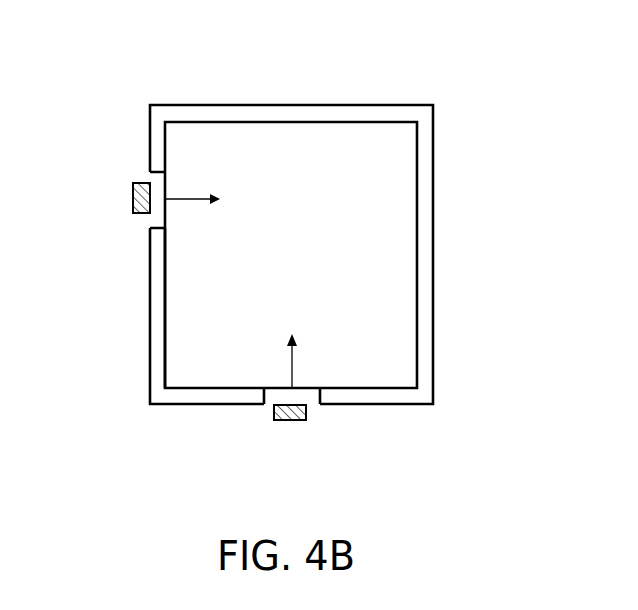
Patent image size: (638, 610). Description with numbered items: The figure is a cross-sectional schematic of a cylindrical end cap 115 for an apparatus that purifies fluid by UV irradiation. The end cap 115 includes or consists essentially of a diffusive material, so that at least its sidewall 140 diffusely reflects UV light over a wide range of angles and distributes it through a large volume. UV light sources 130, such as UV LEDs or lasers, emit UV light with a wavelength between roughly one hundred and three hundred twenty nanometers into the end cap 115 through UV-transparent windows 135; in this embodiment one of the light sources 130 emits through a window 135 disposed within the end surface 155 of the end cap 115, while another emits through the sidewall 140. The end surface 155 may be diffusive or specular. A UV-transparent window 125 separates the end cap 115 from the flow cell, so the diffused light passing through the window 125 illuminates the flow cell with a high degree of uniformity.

The end cap 115 is at (195, 405).
The UV-transparent window 125 is at (427, 247).
The UV light source 130 is at (133, 197).
The UV-transparent window 135 is at (150, 173).
The sidewall 140 is at (348, 132).
The end surface 155 is at (171, 329).